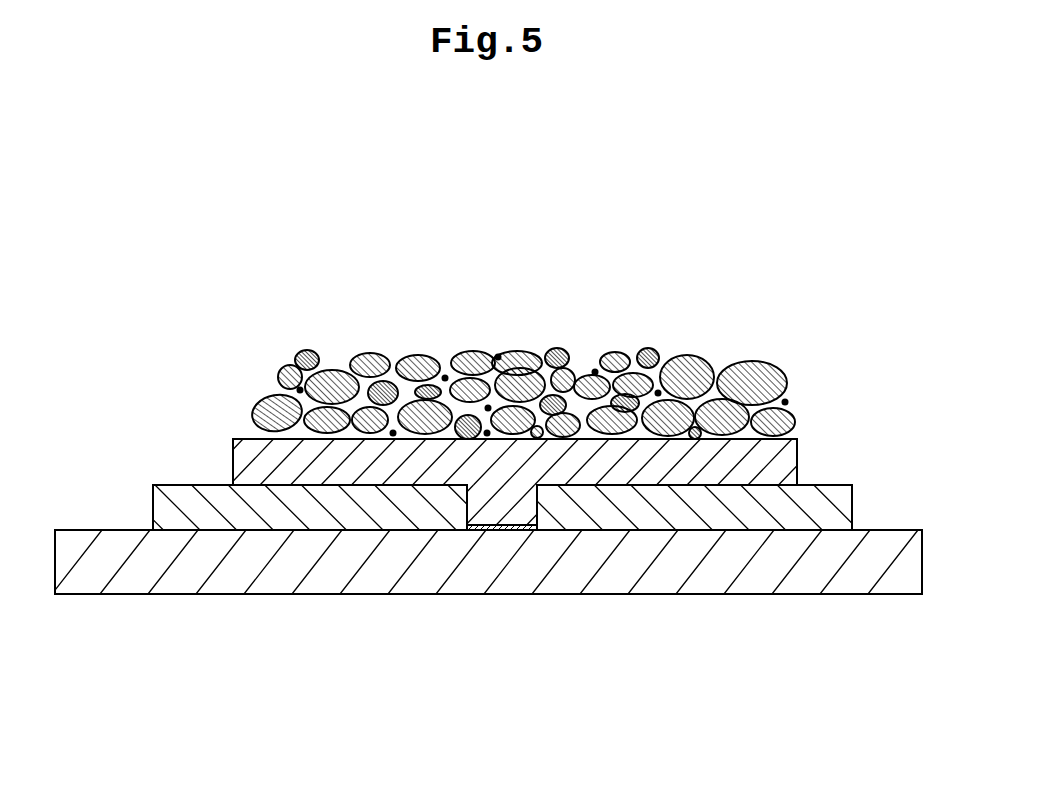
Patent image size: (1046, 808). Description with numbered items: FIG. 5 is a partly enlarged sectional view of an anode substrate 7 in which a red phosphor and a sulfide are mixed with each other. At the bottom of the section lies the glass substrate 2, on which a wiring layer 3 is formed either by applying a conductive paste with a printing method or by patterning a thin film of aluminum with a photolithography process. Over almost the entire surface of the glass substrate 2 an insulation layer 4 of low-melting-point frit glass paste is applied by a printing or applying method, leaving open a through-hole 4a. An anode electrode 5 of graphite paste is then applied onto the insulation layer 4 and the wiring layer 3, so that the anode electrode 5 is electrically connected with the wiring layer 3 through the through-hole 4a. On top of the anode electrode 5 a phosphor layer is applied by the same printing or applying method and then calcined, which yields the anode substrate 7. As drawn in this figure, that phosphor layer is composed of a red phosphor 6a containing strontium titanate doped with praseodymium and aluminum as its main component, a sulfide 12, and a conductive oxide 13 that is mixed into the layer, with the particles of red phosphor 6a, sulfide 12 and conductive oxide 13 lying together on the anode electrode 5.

The glass substrate 2 is at (270, 568).
The wiring layer 3 is at (516, 512).
The insulation layer 4 is at (818, 517).
The through-hole 4a is at (513, 513).
The anode electrode 5 is at (253, 473).
The red phosphor 6a is at (252, 413).
The anode substrate 7 is at (741, 327).
The sulfide 12 is at (385, 378).
The conductive oxide 13 is at (498, 356).